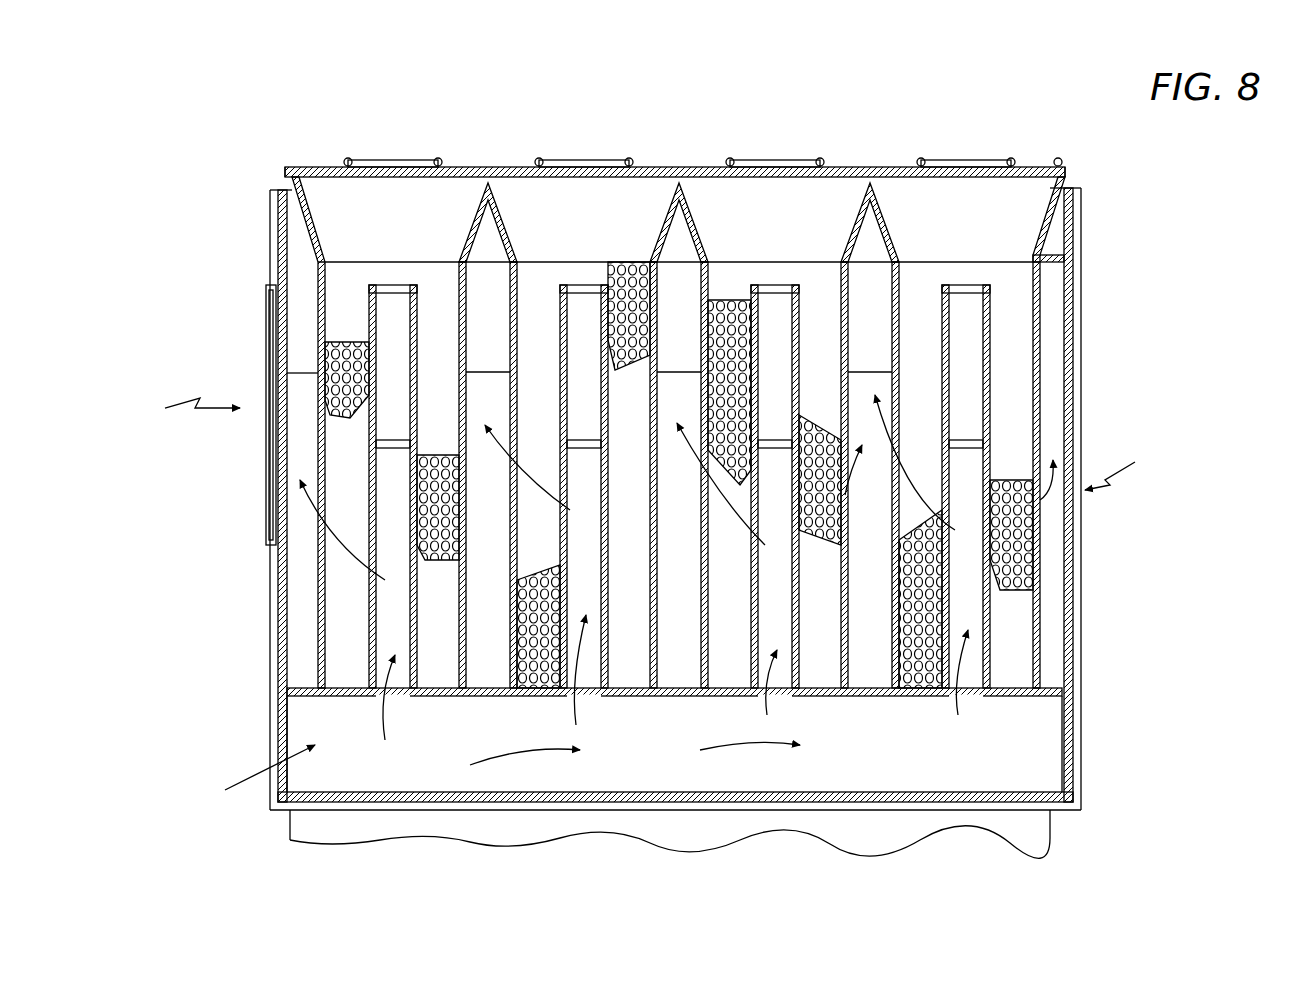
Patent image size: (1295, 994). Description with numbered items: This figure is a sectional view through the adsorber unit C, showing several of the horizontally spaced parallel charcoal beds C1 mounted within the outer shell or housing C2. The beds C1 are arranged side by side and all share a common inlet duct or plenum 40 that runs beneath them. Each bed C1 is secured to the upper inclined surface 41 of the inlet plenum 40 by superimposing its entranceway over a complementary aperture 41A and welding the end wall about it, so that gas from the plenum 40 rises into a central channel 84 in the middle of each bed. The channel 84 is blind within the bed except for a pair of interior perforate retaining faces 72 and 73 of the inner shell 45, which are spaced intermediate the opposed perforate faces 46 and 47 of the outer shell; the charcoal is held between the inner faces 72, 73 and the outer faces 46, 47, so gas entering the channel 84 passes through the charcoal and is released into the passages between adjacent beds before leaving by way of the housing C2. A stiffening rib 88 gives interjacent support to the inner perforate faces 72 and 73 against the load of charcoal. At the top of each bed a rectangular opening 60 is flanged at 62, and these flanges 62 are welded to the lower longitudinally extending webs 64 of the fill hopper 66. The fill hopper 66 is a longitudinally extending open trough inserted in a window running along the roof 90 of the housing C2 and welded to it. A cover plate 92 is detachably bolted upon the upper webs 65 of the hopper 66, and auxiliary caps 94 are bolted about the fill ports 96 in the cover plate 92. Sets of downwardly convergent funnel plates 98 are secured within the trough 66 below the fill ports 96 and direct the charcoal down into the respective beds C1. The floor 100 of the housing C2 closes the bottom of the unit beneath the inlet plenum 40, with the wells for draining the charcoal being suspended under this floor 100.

The inlet plenum 40 is at (864, 757).
The upper inclined surface of the inlet plenum 41 is at (642, 697).
The aperture 41A is at (440, 697).
The inner shell 45 is at (417, 288).
The perforate face 46 is at (515, 318).
The perforate face 47 is at (465, 670).
The rectangular opening 60 is at (386, 262).
The flange 62 is at (285, 262).
The lower longitudinally extending web 64 is at (1048, 258).
The upper web 65 is at (1067, 172).
The fill hopper 66 is at (290, 186).
The interior perforate retaining face 72 is at (370, 482).
The interior perforate retaining face 73 is at (412, 378).
The central channel 84 is at (385, 602).
The stiffening rib 88 is at (400, 444).
The roof 90 is at (1083, 192).
The cover plate 92 is at (1058, 158).
The auxiliary cap 94 is at (432, 162).
The fill port 96 is at (378, 178).
The funnel plate 98 is at (318, 220).
The floor 100 is at (680, 812).
The adsorber unit C is at (191, 405).
The charcoal bed C1 is at (376, 283).
The housing C2 is at (1124, 461).